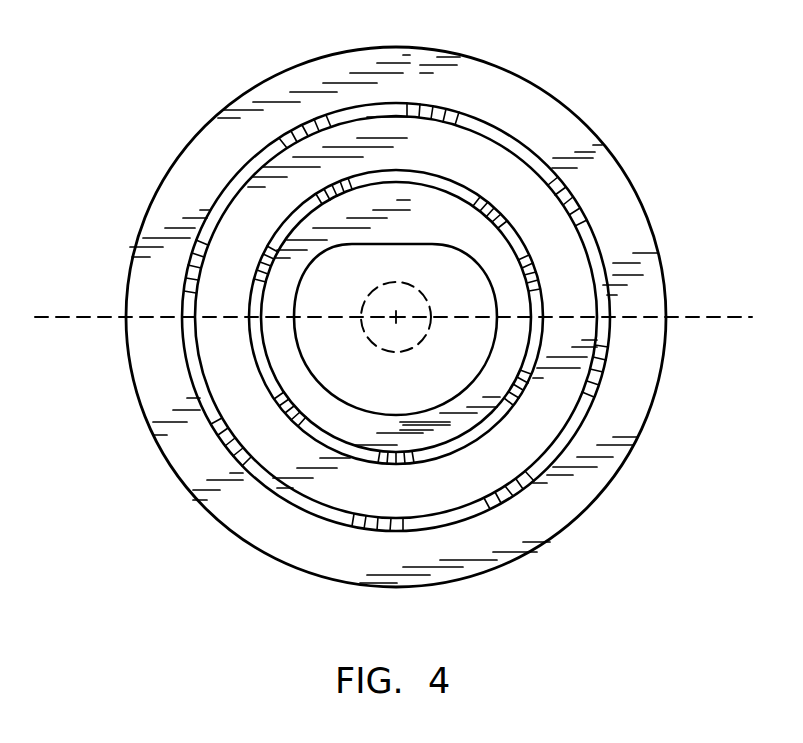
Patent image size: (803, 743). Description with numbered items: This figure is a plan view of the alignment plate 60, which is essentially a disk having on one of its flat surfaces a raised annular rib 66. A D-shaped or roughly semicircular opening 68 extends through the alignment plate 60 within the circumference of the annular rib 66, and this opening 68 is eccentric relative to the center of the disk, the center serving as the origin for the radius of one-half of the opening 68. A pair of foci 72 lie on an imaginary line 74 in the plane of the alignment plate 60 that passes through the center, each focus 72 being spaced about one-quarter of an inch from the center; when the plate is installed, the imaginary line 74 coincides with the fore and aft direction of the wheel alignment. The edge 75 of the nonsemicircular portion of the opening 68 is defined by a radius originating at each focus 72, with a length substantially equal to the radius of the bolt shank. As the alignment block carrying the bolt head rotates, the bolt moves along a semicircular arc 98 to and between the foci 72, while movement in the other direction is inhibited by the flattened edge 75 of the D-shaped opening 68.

The alignment plate 60 is at (152, 433).
The annular rib 66 is at (282, 448).
The D-shaped opening 68 is at (452, 377).
The foci 72 is at (363, 310).
The imaginary line 74 is at (693, 317).
The flattened edge 75 is at (423, 243).
The semicircular arc 98 is at (423, 337).